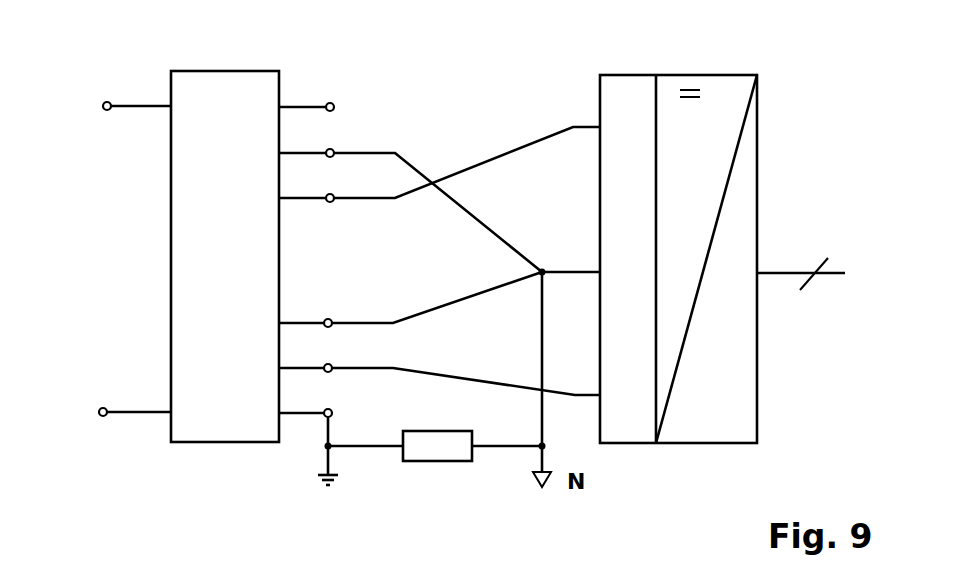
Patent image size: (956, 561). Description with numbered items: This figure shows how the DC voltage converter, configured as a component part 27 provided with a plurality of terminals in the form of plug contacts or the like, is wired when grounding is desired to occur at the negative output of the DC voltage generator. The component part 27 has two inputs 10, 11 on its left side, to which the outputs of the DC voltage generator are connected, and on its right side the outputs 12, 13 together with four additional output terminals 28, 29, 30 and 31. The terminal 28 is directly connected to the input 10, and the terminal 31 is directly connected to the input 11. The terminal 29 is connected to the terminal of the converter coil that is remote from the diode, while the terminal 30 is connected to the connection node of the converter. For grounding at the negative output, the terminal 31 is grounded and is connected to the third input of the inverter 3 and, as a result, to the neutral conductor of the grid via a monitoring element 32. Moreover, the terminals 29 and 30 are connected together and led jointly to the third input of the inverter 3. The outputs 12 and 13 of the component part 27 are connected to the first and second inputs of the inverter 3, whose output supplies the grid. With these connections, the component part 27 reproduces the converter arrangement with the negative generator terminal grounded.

The inverter 3 is at (674, 68).
The input 10 is at (104, 103).
The input 11 is at (100, 409).
The output 12 is at (334, 196).
The output 13 is at (332, 366).
The component part 27 is at (216, 66).
The terminal 28 is at (334, 105).
The terminal 29 is at (334, 151).
The terminal 30 is at (332, 321).
The terminal 31 is at (332, 413).
The monitoring element 32 is at (433, 462).